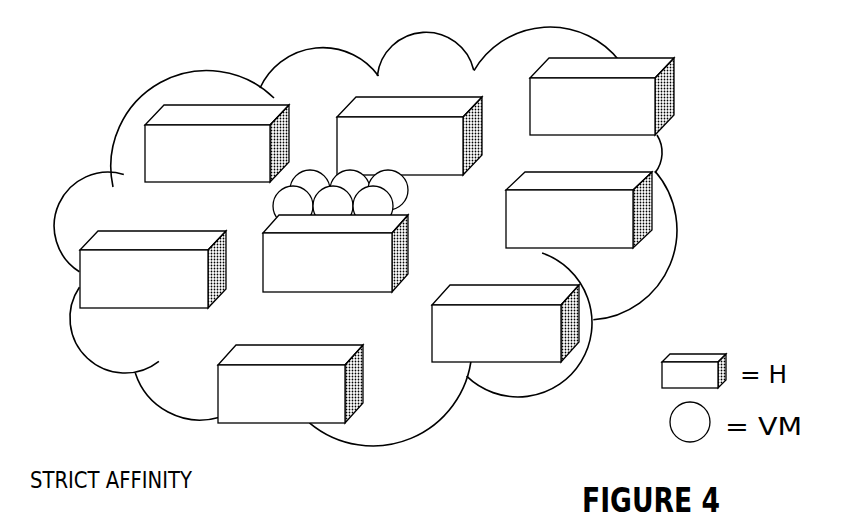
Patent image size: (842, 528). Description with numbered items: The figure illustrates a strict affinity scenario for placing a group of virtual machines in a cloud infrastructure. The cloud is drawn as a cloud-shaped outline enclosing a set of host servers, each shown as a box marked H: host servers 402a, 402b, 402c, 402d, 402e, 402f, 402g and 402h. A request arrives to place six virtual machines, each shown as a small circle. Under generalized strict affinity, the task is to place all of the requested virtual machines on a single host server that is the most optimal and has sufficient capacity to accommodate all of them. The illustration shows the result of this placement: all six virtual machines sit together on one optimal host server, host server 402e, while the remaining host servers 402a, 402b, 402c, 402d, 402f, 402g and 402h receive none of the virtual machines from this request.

The host server 402a is at (217, 143).
The host server 402b is at (409, 136).
The host server 402c is at (602, 96).
The host server 402d is at (153, 269).
The host server 402e is at (335, 253).
The host server 402f is at (579, 210).
The host server 402g is at (290, 384).
The host server 402h is at (505, 323).